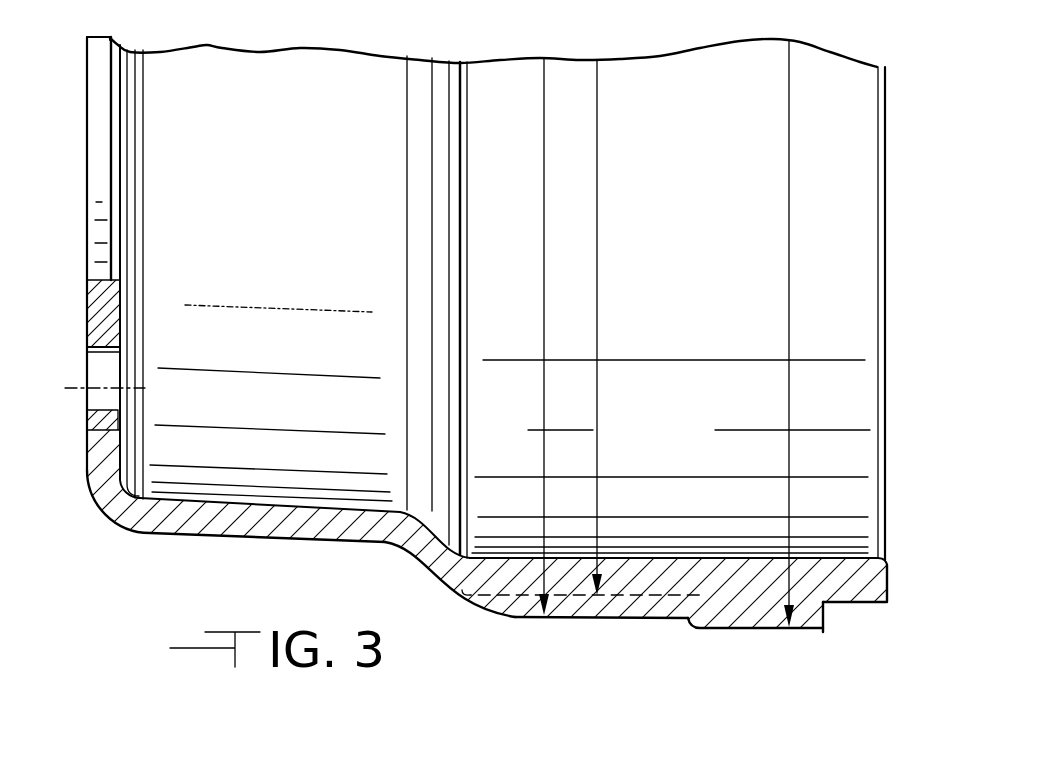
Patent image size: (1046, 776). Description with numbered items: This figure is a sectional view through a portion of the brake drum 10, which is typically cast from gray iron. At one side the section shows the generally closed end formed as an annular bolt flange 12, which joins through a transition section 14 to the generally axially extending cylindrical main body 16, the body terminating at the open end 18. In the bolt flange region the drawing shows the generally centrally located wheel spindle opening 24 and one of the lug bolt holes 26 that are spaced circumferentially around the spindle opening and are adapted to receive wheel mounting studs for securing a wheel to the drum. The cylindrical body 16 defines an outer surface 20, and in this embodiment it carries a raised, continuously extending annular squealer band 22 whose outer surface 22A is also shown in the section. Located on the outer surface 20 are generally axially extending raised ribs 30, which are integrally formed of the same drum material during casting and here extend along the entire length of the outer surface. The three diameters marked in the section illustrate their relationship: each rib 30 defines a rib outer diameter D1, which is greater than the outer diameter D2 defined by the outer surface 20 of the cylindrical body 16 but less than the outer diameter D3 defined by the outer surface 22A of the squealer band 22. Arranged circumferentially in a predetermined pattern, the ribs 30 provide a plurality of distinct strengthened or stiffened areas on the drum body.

The brake drum 10 is at (172, 585).
The annular bolt flange 12 is at (86, 318).
The transition section 14 is at (180, 522).
The cylindrical main body 16 is at (643, 568).
The open end 18 is at (887, 578).
The outer surface 20 is at (590, 618).
The squealer band 22 is at (730, 623).
The outer surface of squealer band 22A is at (803, 632).
The wheel spindle opening 24 is at (110, 278).
The lug bolt holes 26 is at (88, 418).
The raised ribs 30 is at (493, 607).
The rib outer diameter D1 is at (543, 448).
The outer diameter of cylindrical body outer surface D2 is at (597, 439).
The outer diameter of squealer band D3 is at (790, 435).